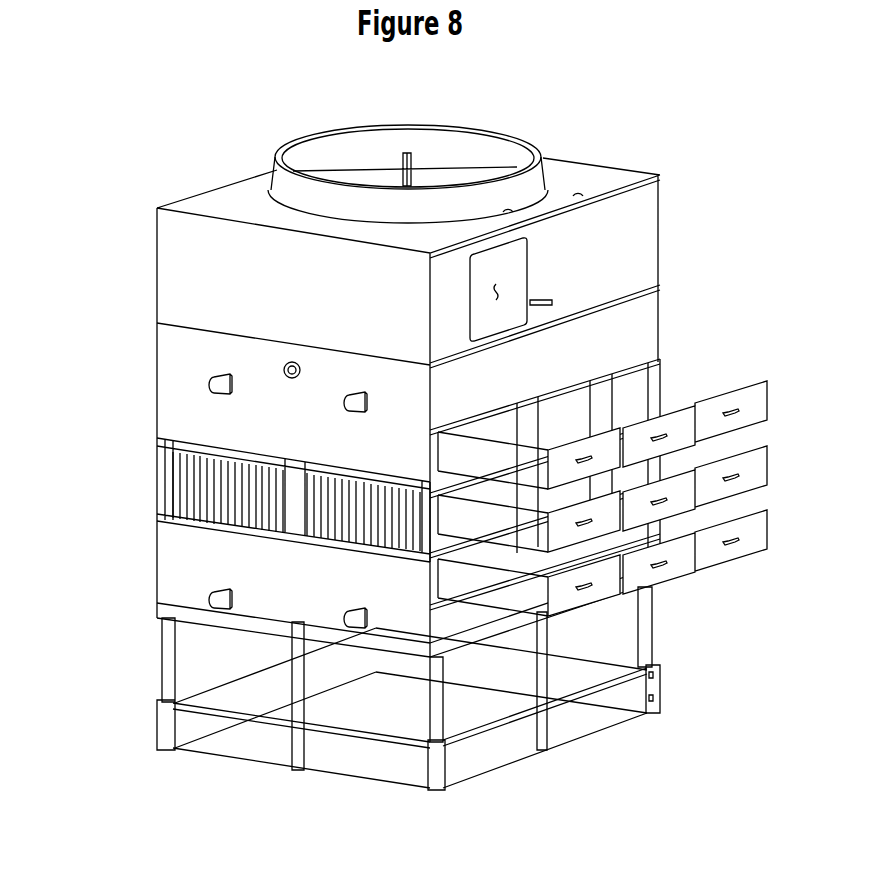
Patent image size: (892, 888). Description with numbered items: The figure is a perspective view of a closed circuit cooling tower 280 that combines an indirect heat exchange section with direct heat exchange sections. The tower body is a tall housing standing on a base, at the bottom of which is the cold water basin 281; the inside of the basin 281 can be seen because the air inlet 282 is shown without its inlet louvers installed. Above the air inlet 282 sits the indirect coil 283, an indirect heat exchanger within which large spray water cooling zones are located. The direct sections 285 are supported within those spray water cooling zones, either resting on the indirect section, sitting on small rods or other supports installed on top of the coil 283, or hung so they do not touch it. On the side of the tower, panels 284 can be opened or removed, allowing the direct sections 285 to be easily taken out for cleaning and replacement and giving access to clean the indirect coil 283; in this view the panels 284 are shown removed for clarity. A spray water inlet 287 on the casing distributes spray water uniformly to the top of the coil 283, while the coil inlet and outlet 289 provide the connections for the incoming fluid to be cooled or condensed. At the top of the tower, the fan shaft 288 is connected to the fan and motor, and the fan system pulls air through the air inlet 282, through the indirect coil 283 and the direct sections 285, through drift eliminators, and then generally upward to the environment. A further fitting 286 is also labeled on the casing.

The cooling tower 280 is at (130, 199).
The cold water basin 281 is at (658, 690).
The air inlet 282 is at (200, 660).
The indirect coil 283 is at (162, 468).
The panels 284 is at (768, 380).
The direct sections 285 is at (478, 449).
The pipe connection 286 is at (210, 380).
The spray water inlet 287 is at (284, 367).
The fan shaft 288 is at (410, 160).
The coil inlet and outlet 289 is at (212, 597).